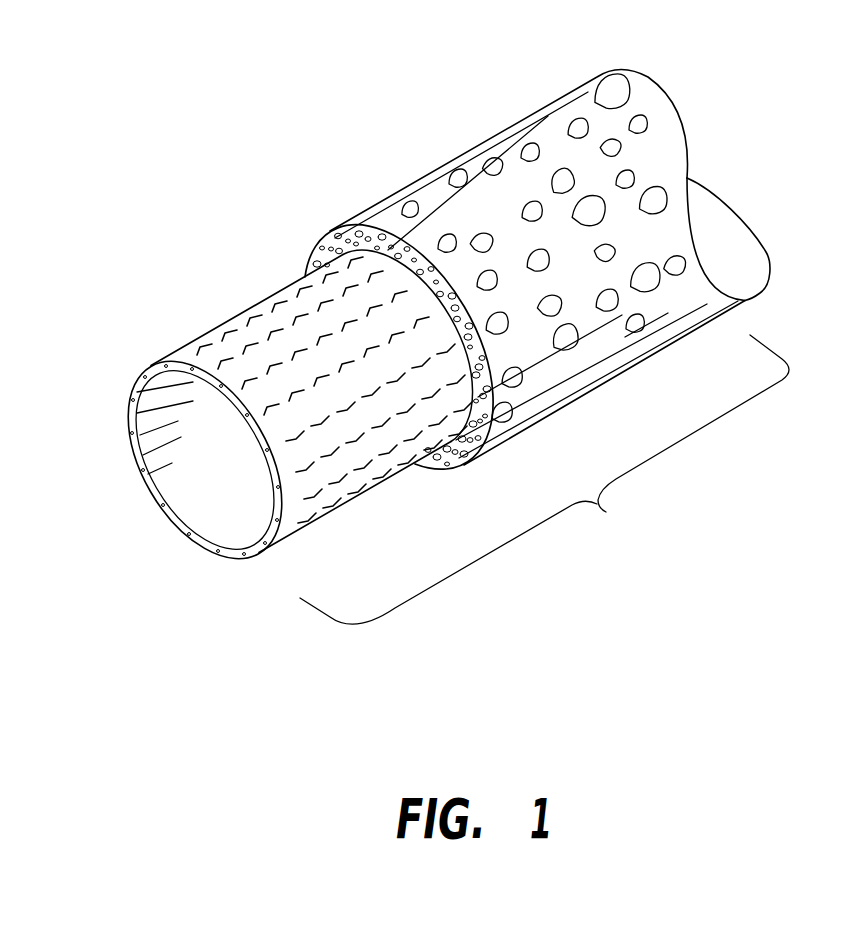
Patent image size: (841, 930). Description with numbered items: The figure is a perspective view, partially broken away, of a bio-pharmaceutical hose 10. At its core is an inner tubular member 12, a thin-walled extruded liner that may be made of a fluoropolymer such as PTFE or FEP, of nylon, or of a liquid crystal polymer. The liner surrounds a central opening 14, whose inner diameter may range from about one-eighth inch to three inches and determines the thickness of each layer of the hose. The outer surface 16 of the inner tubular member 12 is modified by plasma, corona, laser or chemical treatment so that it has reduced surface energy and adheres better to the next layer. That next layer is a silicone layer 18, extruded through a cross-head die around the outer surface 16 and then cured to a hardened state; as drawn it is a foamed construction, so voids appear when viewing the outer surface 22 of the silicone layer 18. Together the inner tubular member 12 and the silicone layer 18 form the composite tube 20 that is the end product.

The hose 10 is at (330, 46).
The inner tubular member 12 is at (199, 337).
The opening 14 is at (207, 503).
The outer surface 16 is at (308, 311).
The silicone layer 18 is at (493, 130).
The composite tube 20 is at (544, 479).
The outer surface of the silicone layer 22 is at (474, 214).